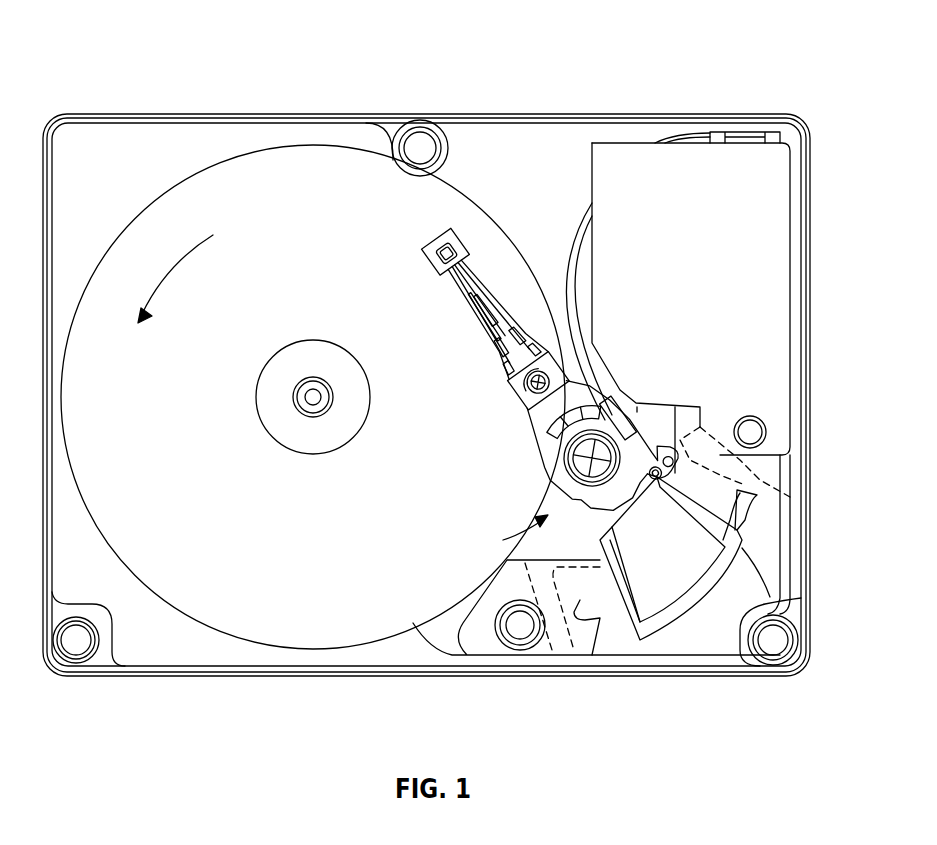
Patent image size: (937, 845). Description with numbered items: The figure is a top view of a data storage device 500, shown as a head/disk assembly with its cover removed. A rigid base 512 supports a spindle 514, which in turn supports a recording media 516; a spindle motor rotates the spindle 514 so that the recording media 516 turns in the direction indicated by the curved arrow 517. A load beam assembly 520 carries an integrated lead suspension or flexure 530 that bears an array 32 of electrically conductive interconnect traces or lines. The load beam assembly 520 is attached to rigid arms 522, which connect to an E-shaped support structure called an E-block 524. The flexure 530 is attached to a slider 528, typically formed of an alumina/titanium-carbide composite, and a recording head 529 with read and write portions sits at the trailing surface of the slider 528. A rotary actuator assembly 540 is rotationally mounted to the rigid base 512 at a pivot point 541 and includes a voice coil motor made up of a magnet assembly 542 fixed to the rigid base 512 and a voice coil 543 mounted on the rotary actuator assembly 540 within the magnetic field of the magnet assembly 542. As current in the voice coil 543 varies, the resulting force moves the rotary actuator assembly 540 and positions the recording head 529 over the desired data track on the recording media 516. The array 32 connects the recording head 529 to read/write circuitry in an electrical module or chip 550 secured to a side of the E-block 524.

The data storage device 500 is at (122, 52).
The rigid base 512 is at (195, 680).
The spindle 514 is at (270, 358).
The recording media 516 is at (299, 635).
The curved arrow 517 is at (193, 262).
The load beam assembly 520 is at (487, 377).
The rigid arms 522 is at (512, 398).
The E-block 524 is at (535, 445).
The slider 528 is at (465, 245).
The recording head 529 is at (442, 247).
The flexure 530 is at (465, 260).
The array of electrically conductive interconnect traces 32 is at (482, 300).
The rotary actuator assembly 540 is at (504, 538).
The pivot point 541 is at (556, 480).
The magnet assembly 542 is at (693, 460).
The voice coil 543 is at (745, 540).
The electrical module or chip 550 is at (632, 413).